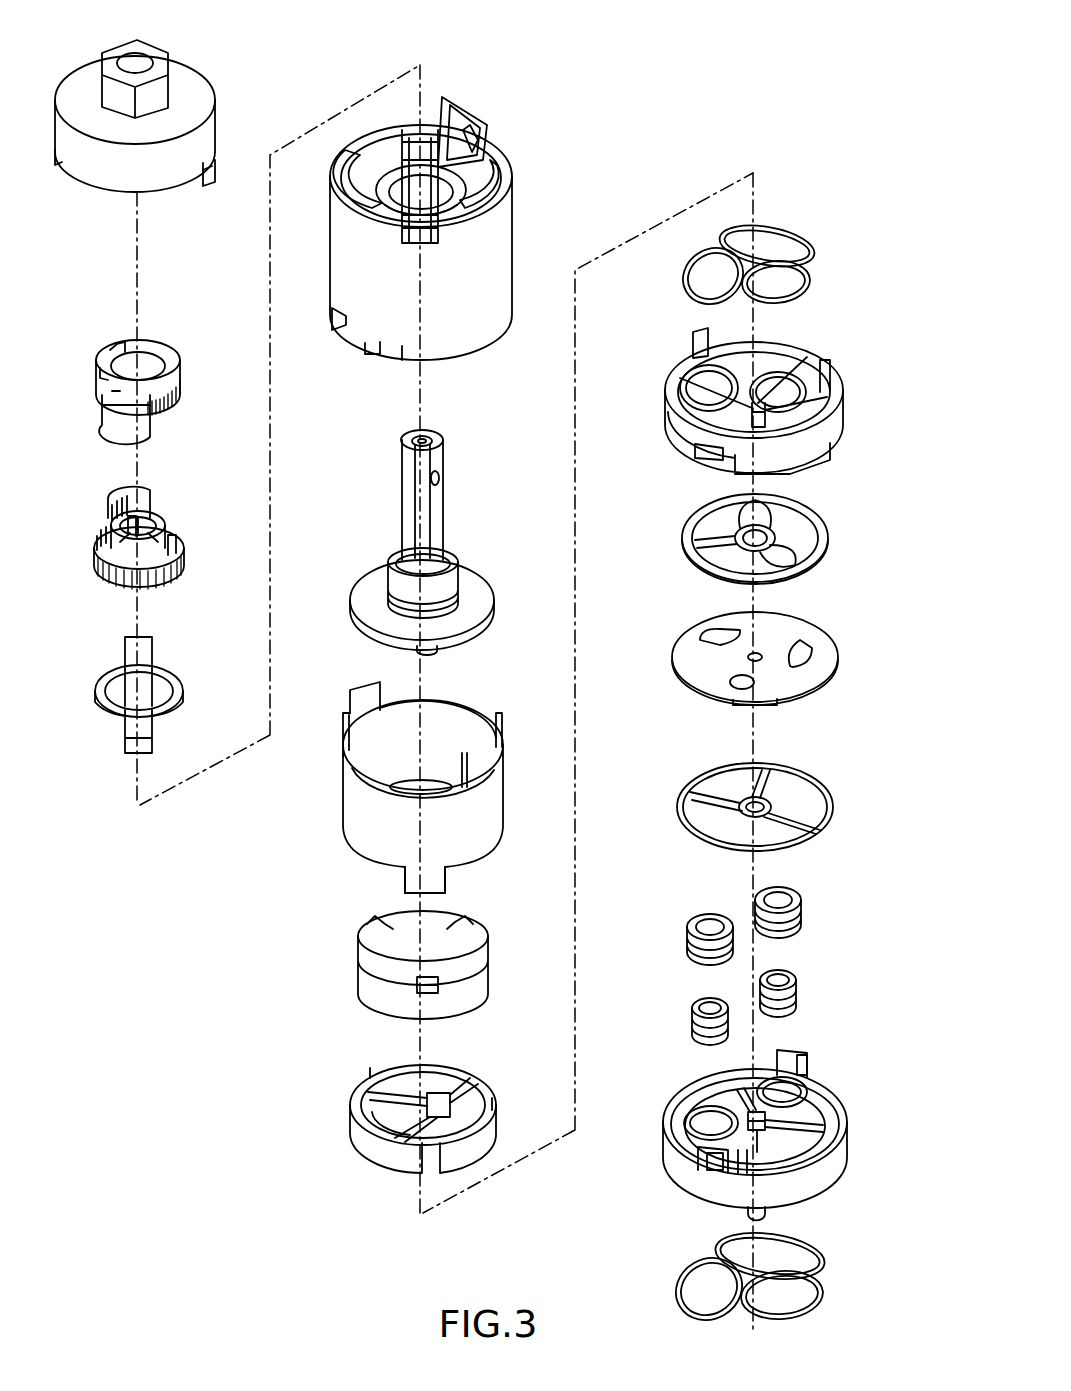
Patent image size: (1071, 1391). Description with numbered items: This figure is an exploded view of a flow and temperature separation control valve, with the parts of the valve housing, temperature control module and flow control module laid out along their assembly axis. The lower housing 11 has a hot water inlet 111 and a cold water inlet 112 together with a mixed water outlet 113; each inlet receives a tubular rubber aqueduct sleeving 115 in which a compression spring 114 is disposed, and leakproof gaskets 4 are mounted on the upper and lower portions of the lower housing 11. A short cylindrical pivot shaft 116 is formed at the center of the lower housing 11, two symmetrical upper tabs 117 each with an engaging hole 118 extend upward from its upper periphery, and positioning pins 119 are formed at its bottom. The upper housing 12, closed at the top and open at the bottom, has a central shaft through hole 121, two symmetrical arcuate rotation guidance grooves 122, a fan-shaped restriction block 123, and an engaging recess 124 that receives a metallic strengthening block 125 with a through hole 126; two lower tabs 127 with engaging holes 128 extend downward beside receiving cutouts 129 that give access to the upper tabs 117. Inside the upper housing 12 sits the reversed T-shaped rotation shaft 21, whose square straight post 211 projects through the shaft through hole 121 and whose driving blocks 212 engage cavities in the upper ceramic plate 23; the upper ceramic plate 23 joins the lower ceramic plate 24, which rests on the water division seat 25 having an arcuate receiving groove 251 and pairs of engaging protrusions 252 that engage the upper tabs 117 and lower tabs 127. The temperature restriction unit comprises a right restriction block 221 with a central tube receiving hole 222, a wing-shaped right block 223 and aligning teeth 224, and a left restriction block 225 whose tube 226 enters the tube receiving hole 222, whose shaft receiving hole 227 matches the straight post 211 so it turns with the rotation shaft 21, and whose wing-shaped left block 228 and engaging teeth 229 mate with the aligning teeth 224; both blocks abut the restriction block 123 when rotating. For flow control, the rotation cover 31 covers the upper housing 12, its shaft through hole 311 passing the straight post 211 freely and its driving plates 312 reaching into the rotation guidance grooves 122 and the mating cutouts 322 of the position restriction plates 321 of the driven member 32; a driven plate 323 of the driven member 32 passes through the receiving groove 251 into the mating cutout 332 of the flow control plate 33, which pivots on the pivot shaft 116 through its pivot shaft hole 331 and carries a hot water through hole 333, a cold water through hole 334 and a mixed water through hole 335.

The leakproof gasket 4 is at (788, 222).
The lower housing 11 is at (823, 1198).
The hot water inlet 111 is at (707, 1117).
The cold water inlet 112 is at (787, 1083).
The mixed water outlet 113 is at (843, 1137).
The compression spring 114 is at (700, 1007).
The aqueduct sleeving 115 is at (700, 922).
The pivot shaft 116 is at (723, 1077).
The upper tab 117 is at (807, 1053).
The engaging hole 118 is at (790, 1052).
The positioning pin 119 is at (750, 1210).
The upper housing 12 is at (519, 241).
The shaft through hole 121 is at (437, 163).
The rotation guidance groove 122 is at (332, 173).
The restriction block 123 is at (487, 117).
The engaging recess 124 is at (415, 140).
The strengthening block 125 is at (190, 676).
The through hole 126 is at (152, 673).
The lower tab 127 is at (365, 348).
The engaging hole 128 is at (335, 320).
The receiving cutout 129 is at (400, 355).
The rotation shaft 21 is at (471, 562).
The straight post 211 is at (435, 500).
The driving block 212 is at (432, 653).
The right restriction block 221 is at (173, 348).
The tube receiving hole 222 is at (130, 340).
The right block 223 is at (112, 413).
The aligning teeth 224 is at (187, 380).
The left restriction block 225 is at (173, 530).
The tube 226 is at (177, 543).
The shaft receiving hole 227 is at (150, 517).
The left block 228 is at (127, 500).
The engaging teeth 229 is at (110, 533).
The upper ceramic plate 23 is at (489, 922).
The lower ceramic plate 24 is at (476, 1071).
The water division seat 25 is at (825, 342).
The receiving groove 251 is at (840, 417).
The engaging protrusion 252 is at (667, 410).
The rotation cover 31 is at (215, 76).
The shaft through hole 311 is at (141, 62).
The driving plate 312 is at (203, 182).
The driven member 32 is at (475, 698).
The position restriction plate 321 is at (370, 683).
The mating cutout 322 is at (348, 710).
The driven plate 323 is at (413, 880).
The flow control plate 33 is at (830, 693).
The pivot shaft hole 331 is at (763, 653).
The mating cutout 332 is at (743, 707).
The hot water through hole 333 is at (720, 637).
The cold water through hole 334 is at (813, 650).
The mixed water through hole 335 is at (740, 683).